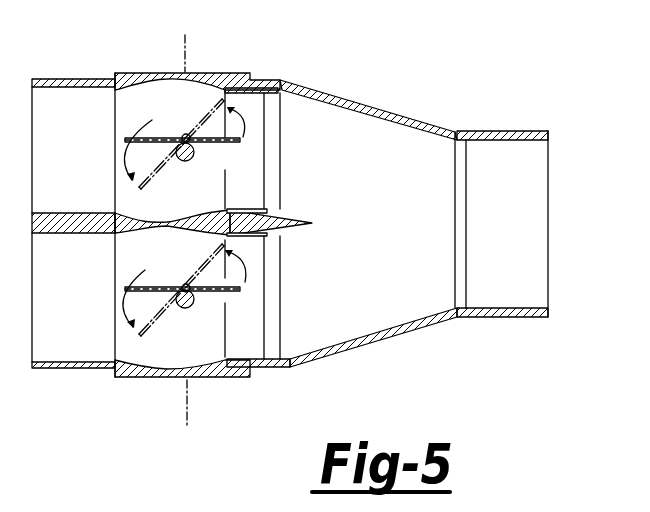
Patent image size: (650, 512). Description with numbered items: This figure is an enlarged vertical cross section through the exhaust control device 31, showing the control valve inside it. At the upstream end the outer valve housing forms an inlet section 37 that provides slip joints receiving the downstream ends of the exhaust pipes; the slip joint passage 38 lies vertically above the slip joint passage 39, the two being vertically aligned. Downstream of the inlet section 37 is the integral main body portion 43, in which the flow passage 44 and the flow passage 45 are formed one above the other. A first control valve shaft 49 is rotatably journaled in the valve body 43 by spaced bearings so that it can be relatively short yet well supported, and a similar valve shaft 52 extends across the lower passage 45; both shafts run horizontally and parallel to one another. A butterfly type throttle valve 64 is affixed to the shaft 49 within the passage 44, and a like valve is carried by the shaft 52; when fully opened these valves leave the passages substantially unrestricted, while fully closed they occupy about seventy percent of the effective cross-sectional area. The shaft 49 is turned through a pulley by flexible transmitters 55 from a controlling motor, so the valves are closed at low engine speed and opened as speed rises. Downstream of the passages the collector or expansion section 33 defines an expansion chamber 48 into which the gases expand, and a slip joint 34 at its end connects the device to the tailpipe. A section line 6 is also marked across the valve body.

The section line 6- 6 is at (180, 35).
The exhaust control device 31 is at (444, 91).
The expansion section 33 is at (412, 325).
The slip joint 34 is at (507, 130).
The inlet section 37 is at (82, 368).
The slip joint passage 38 is at (83, 166).
The slip joint passage 39 is at (83, 312).
The main body portion 43 is at (145, 73).
The flow passage 44 is at (198, 104).
The flow passage 45 is at (206, 352).
The expansion chamber 48 is at (381, 241).
The first control valve shaft 49 is at (190, 163).
The valve shaft 52 is at (180, 308).
The flexible transmitters 55 is at (184, 290).
The butterfly type throttle valve 64 is at (184, 144).